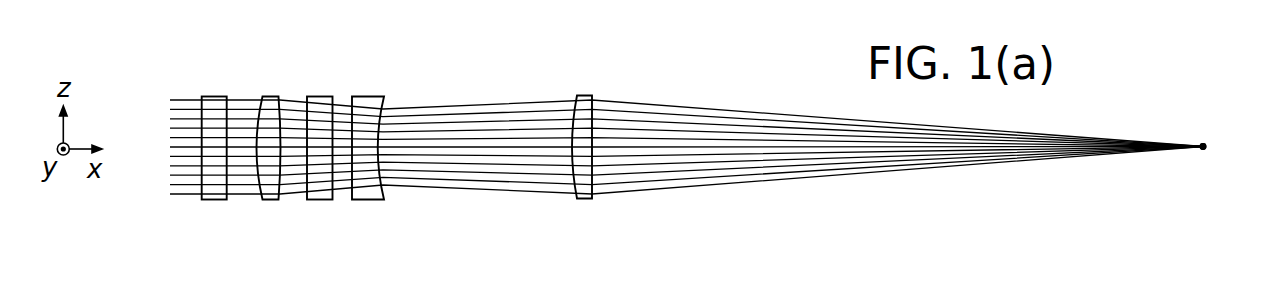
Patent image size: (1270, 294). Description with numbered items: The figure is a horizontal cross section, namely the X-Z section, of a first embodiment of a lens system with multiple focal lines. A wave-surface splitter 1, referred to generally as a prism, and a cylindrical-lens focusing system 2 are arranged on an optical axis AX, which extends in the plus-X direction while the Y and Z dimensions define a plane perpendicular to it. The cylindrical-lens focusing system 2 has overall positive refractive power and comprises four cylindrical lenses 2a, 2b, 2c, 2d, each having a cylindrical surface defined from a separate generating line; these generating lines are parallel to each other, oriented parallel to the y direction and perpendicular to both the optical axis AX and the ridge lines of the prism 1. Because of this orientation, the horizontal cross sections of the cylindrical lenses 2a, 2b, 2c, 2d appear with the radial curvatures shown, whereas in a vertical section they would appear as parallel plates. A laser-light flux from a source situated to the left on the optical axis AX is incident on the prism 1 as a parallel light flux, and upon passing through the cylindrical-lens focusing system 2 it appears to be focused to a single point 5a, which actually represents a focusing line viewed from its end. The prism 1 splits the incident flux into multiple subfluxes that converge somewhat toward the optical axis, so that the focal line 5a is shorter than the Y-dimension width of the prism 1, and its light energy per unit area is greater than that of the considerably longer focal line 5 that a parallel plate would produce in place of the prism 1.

The wave-surface splitter 1 is at (218, 103).
The cylindrical-lens focusing system 2 is at (597, 84).
The cylindrical lens 2a is at (270, 200).
The cylindrical lens 2b is at (322, 200).
The cylindrical lens 2c is at (370, 200).
The cylindrical lens 2d is at (585, 199).
The focal line 5 is at (1203, 142).
The focal line 5a is at (1203, 147).
The optical axis AX is at (172, 147).